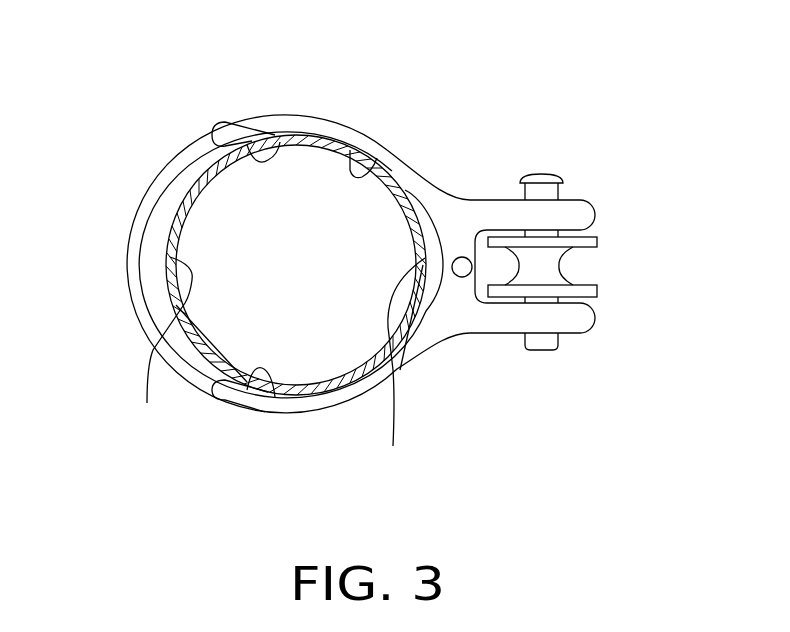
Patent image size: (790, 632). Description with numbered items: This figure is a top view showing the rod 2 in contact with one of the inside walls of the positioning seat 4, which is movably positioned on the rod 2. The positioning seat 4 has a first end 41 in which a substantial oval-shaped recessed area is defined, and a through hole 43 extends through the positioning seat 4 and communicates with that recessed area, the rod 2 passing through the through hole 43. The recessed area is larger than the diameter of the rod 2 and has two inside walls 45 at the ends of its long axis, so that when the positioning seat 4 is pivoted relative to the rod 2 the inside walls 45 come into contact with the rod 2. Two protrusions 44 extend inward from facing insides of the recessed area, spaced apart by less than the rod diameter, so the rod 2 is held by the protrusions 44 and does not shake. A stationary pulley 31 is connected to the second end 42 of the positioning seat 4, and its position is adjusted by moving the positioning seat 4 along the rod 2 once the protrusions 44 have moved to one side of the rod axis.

The positioning seat 4 is at (140, 171).
The rod 2 is at (426, 321).
The first end 41 is at (333, 400).
The second end 42 is at (570, 212).
The through hole 43 is at (350, 150).
The protrusions 44 is at (280, 142).
The inside walls 45 is at (281, 367).
The stationary pulley 31 is at (592, 238).